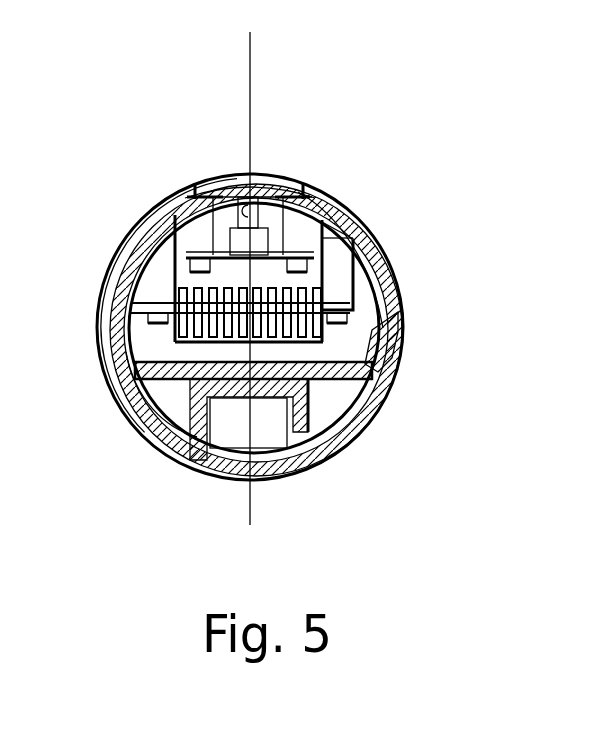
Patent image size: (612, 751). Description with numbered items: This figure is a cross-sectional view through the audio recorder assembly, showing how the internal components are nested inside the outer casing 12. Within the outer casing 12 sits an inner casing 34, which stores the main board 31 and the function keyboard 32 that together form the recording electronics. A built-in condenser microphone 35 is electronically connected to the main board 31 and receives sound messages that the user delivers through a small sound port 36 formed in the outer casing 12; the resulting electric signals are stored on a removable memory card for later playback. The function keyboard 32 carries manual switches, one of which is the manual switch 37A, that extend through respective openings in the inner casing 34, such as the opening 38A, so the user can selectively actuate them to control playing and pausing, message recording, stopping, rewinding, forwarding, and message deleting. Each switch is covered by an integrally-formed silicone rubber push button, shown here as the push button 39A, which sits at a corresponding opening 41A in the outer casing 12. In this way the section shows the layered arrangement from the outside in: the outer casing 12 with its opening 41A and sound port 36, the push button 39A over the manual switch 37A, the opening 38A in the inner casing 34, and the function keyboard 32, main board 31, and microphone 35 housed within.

The outer casing 12 is at (398, 262).
The main board 31 is at (170, 296).
The function keyboard 32 is at (165, 232).
The inner casing 34 is at (385, 312).
The built-in condenser microphone 35 is at (227, 423).
The sound port 36 is at (247, 477).
The manual switch 37A is at (262, 183).
The opening 38A is at (240, 178).
The silicone rubber push button 39A is at (249, 266).
The opening 41A is at (296, 182).